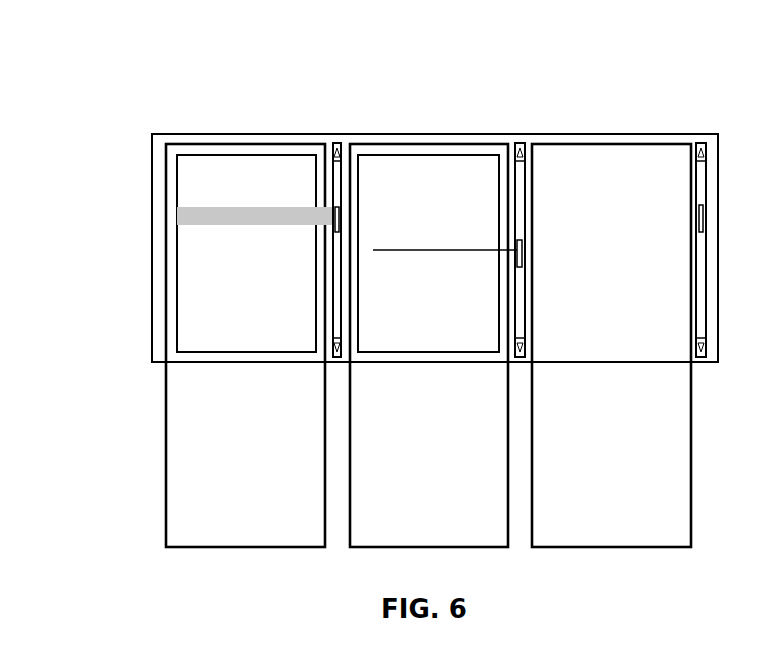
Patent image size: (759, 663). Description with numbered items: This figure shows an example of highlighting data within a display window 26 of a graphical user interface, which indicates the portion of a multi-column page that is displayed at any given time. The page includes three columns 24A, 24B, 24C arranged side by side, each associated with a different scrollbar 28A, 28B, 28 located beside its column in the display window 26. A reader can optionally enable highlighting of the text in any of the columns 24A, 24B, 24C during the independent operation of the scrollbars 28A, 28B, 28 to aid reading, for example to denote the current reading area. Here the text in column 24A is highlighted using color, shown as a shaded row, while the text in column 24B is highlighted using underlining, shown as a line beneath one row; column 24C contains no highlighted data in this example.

The display window 26 is at (152, 262).
The column 24A is at (248, 134).
The column 24B is at (427, 134).
The column 24C is at (613, 134).
The scrollbar 28A is at (340, 134).
The scrollbar 28B is at (518, 134).
The scrollbar 28 is at (702, 134).